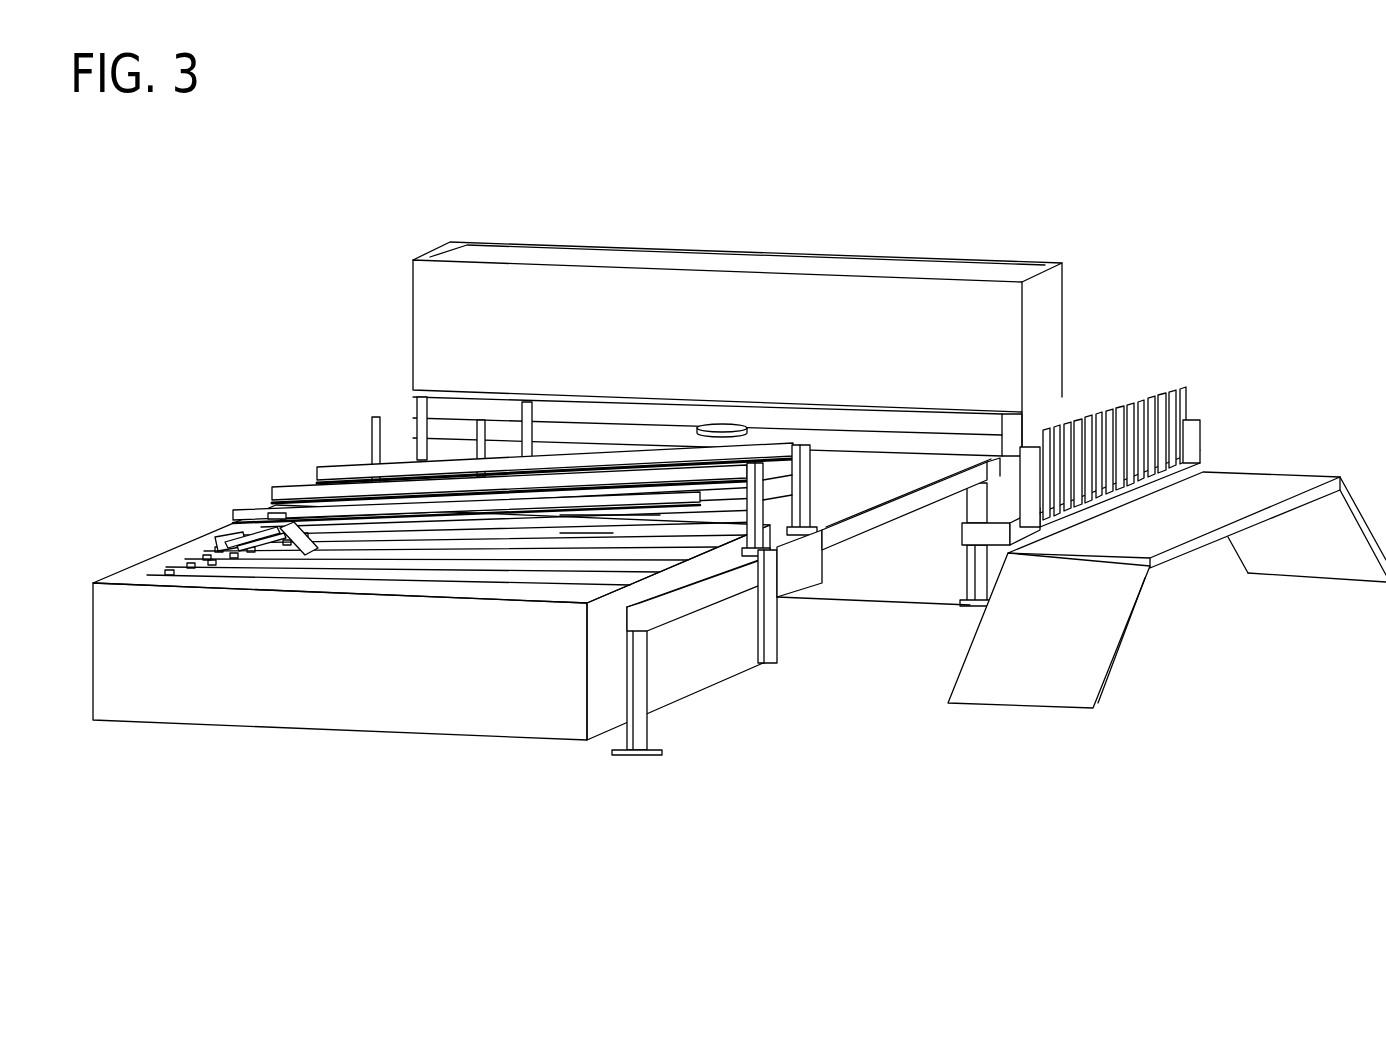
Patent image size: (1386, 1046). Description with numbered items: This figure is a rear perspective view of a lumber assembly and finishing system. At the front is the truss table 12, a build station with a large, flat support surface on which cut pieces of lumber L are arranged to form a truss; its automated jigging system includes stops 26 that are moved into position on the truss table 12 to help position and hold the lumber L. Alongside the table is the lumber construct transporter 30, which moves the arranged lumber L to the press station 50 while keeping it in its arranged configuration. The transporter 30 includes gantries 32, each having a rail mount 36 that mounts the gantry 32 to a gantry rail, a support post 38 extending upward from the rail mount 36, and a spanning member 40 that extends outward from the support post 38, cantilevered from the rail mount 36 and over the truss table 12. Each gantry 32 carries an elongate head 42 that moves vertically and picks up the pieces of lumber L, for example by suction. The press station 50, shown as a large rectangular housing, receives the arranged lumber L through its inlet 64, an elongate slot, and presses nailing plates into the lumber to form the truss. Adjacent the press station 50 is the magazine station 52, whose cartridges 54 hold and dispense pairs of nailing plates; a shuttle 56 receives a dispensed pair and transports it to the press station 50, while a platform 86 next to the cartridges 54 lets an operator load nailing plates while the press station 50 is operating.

The truss table 12 is at (326, 746).
The stops 26 is at (318, 555).
The lumber construct transporter 30 is at (826, 615).
The gantry 32 is at (733, 612).
The rail mount 36 is at (766, 600).
The support post 38 is at (770, 505).
The spanning member 40 is at (622, 445).
The head 42 is at (243, 518).
The press station 50 is at (832, 234).
The magazine station 52 is at (1167, 493).
The cartridges 54 is at (1180, 386).
The shuttle 56 is at (967, 535).
The inlet 64 is at (934, 430).
The platform 86 is at (1262, 481).
The lumber L is at (220, 533).